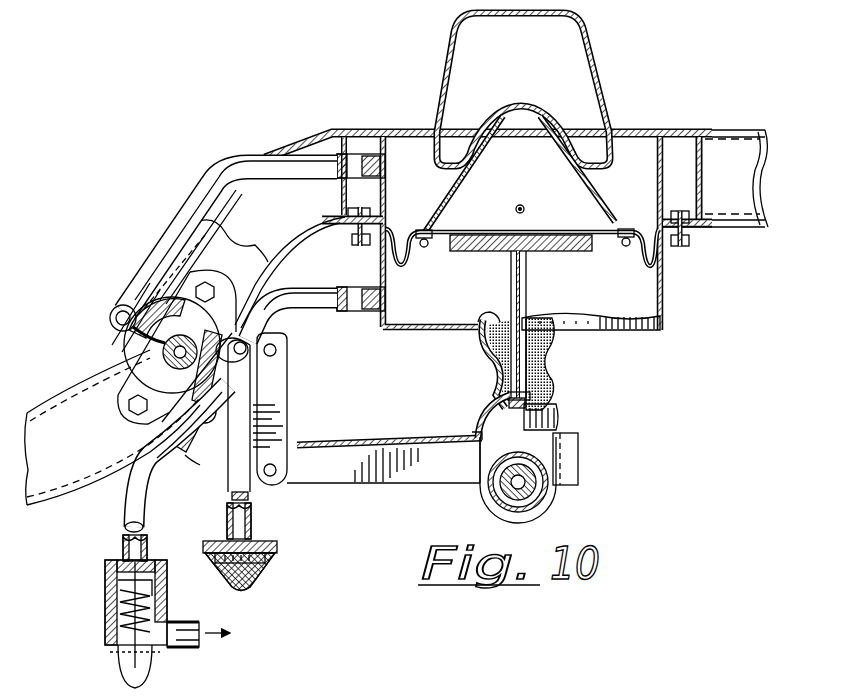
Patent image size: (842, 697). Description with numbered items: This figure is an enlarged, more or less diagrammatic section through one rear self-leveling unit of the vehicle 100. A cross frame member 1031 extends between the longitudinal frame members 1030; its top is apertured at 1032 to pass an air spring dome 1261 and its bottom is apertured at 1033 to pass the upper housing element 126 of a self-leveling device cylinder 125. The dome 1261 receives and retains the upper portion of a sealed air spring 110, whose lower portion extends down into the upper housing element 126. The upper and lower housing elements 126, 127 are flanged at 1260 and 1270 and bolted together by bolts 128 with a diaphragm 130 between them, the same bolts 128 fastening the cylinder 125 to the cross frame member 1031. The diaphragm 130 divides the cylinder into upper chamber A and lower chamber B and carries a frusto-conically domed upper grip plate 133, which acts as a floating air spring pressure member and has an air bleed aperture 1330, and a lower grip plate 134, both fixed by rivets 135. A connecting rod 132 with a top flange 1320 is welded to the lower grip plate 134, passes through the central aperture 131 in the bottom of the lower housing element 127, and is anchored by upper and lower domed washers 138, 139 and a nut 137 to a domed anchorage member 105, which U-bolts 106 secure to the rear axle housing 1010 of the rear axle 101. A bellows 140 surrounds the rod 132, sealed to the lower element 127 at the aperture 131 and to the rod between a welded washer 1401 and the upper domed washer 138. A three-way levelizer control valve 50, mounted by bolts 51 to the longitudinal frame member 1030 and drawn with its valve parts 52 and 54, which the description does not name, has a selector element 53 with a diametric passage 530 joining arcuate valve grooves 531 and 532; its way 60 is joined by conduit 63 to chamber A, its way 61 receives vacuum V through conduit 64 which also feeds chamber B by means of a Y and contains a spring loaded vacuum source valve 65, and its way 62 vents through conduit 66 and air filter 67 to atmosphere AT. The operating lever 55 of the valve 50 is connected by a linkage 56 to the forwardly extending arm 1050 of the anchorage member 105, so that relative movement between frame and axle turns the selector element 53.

The vehicle 100 is at (322, 127).
The sealed air spring 110 is at (585, 45).
The air spring dome 1261 is at (598, 58).
The aperture in top of cross frame member 1032 is at (612, 128).
The self-leveling device cylinder 125 is at (665, 155).
The upper housing element 126 is at (668, 163).
The cross frame member 1031 is at (700, 223).
The bolts 128 is at (688, 248).
The aperture in bottom of cross frame member 1033 is at (386, 214).
The upper grip plate 133 is at (562, 152).
The air bleed aperture 1330 is at (520, 204).
The diaphragm 130 is at (352, 238).
The lower grip plate 134 is at (558, 240).
The rivets 135 is at (624, 228).
The central aperture 131 is at (490, 314).
The top flange 1320 is at (552, 266).
The lower housing element 127 is at (663, 313).
The flange of lower housing element 1270 is at (352, 248).
The flange of upper housing element 1260 is at (330, 219).
The conduit 63 is at (198, 181).
The three-way levelizer control valve 50 is at (184, 297).
The arcuate valve groove 531 is at (150, 284).
The bolts 51 is at (213, 291).
The ball joint 54 is at (222, 332).
The way 60 is at (112, 312).
The passage 530 is at (130, 331).
The selector element 53 is at (163, 352).
The bracket plate 52 is at (178, 376).
The operating lever 55 is at (185, 421).
The way 62 is at (272, 323).
The conduit 64 is at (340, 312).
The arcuate valve groove 532 is at (220, 368).
The way 61 is at (217, 412).
The linkage 56 is at (278, 448).
The forwardly extending arm 1050 is at (322, 490).
The element Y is at (200, 467).
The conduit 66 is at (238, 496).
The air filter 67 is at (272, 581).
The atmosphere AT is at (233, 607).
The vacuum V is at (231, 637).
The vacuum source valve 65 is at (108, 606).
The longitudinal frame member 1030 is at (70, 492).
The bellows 140 is at (552, 363).
The washer 1401 is at (546, 391).
The connecting rod 132 is at (503, 364).
The upper domed washer 138 is at (497, 392).
The nut 137 is at (552, 419).
The domed anchorage member 105 is at (532, 404).
The U-bolts 106 is at (480, 426).
The lower domed washer 139 is at (492, 438).
The rear axle housing 1010 is at (490, 501).
The rear axle 101 is at (540, 491).